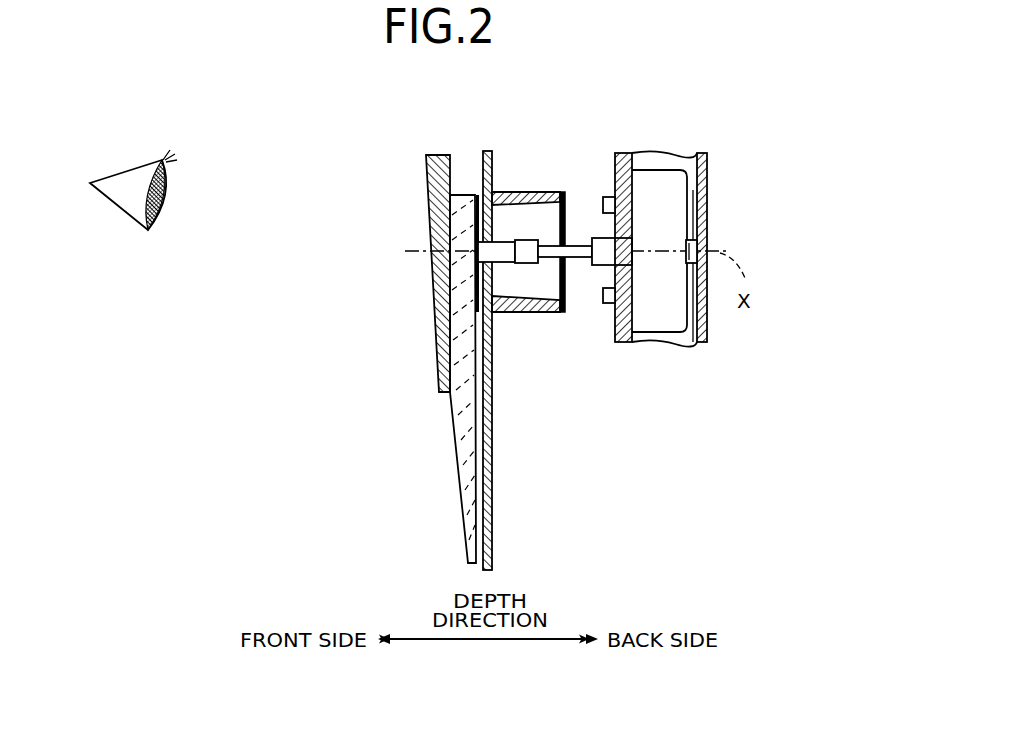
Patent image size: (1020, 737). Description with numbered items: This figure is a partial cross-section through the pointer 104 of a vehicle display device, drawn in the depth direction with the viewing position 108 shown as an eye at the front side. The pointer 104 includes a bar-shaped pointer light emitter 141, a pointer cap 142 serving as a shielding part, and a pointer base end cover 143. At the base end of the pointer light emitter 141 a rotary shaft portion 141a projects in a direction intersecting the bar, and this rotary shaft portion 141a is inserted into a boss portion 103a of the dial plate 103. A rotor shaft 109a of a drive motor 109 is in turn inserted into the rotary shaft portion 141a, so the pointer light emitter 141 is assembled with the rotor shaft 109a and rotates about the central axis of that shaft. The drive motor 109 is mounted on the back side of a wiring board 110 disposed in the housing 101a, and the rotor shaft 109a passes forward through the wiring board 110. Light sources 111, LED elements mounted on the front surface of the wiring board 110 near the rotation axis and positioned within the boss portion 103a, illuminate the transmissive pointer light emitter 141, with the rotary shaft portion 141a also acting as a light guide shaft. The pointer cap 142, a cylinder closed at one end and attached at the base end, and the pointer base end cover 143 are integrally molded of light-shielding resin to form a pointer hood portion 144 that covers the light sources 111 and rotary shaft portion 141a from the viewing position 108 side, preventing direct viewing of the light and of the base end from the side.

The viewing position 108 is at (118, 162).
The pointer 104 is at (278, 125).
The pointer hood portion 144 is at (338, 125).
The pointer cap 142 is at (462, 180).
The pointer base end cover 143 is at (425, 207).
The pointer light emitter 141 is at (450, 421).
The rotary shaft portion 141a is at (528, 240).
The dial plate 103 is at (497, 440).
The boss portion 103a is at (522, 313).
The wiring board 110 is at (634, 306).
The light source 111 is at (607, 198).
The housing 101a is at (712, 172).
The drive motor 109 is at (676, 194).
The rotor shaft 109a is at (580, 240).